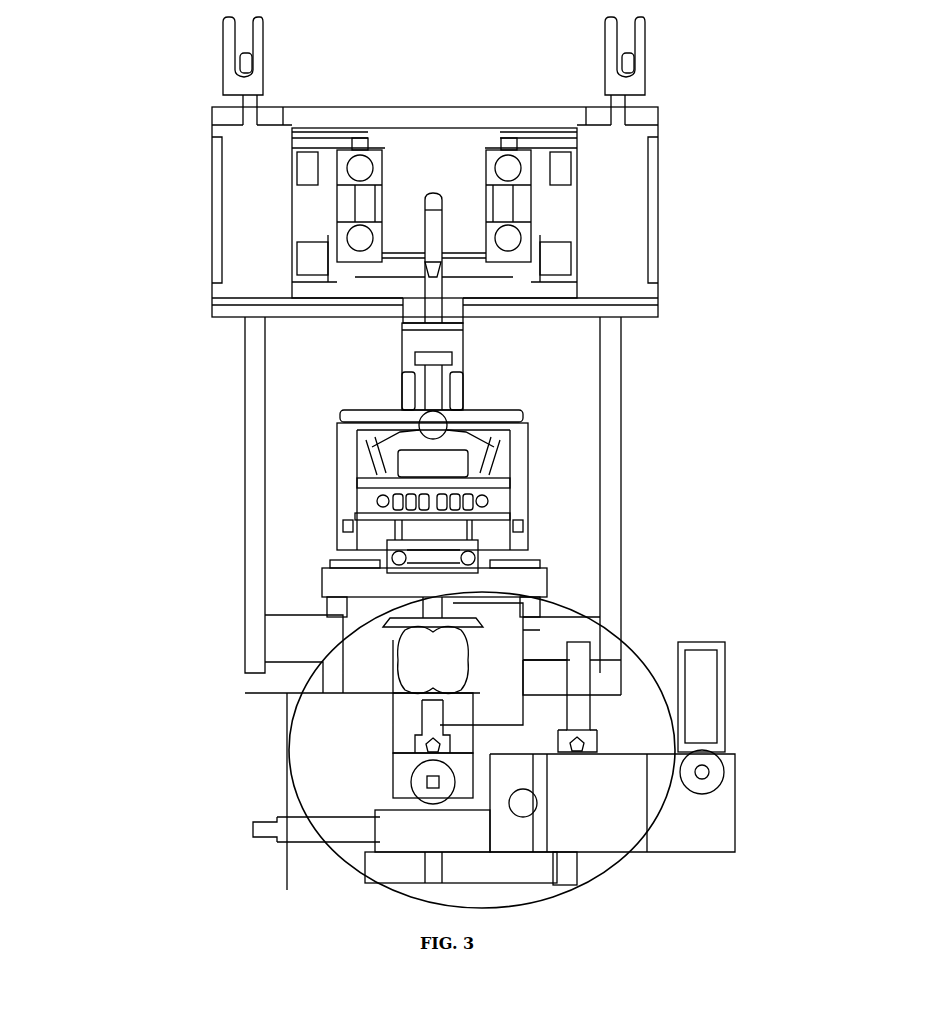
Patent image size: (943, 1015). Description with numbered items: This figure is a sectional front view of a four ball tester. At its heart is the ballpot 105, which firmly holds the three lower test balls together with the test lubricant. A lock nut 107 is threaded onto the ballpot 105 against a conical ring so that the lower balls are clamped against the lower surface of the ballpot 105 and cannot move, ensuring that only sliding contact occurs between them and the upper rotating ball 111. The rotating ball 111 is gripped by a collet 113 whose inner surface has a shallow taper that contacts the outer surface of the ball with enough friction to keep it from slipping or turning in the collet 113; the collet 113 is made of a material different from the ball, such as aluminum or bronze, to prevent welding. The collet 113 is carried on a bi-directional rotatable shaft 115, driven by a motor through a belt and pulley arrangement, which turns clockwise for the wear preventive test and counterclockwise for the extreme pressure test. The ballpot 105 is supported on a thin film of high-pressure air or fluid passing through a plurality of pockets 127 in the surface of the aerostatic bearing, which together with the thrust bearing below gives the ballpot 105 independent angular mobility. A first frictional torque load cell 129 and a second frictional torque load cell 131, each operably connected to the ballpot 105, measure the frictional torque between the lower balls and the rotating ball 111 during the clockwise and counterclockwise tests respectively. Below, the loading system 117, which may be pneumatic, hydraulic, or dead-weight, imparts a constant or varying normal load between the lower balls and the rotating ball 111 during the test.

The ballpot 105 is at (520, 455).
The lock nut 107 is at (372, 419).
The rotating ball 111 is at (434, 425).
The collet 113 is at (430, 386).
The rotatable shaft 115 is at (463, 330).
The loading system 117 is at (668, 801).
The pockets 127 is at (478, 498).
The first frictional torque load cell 129 is at (490, 630).
The second frictional torque load cell 131 is at (432, 835).